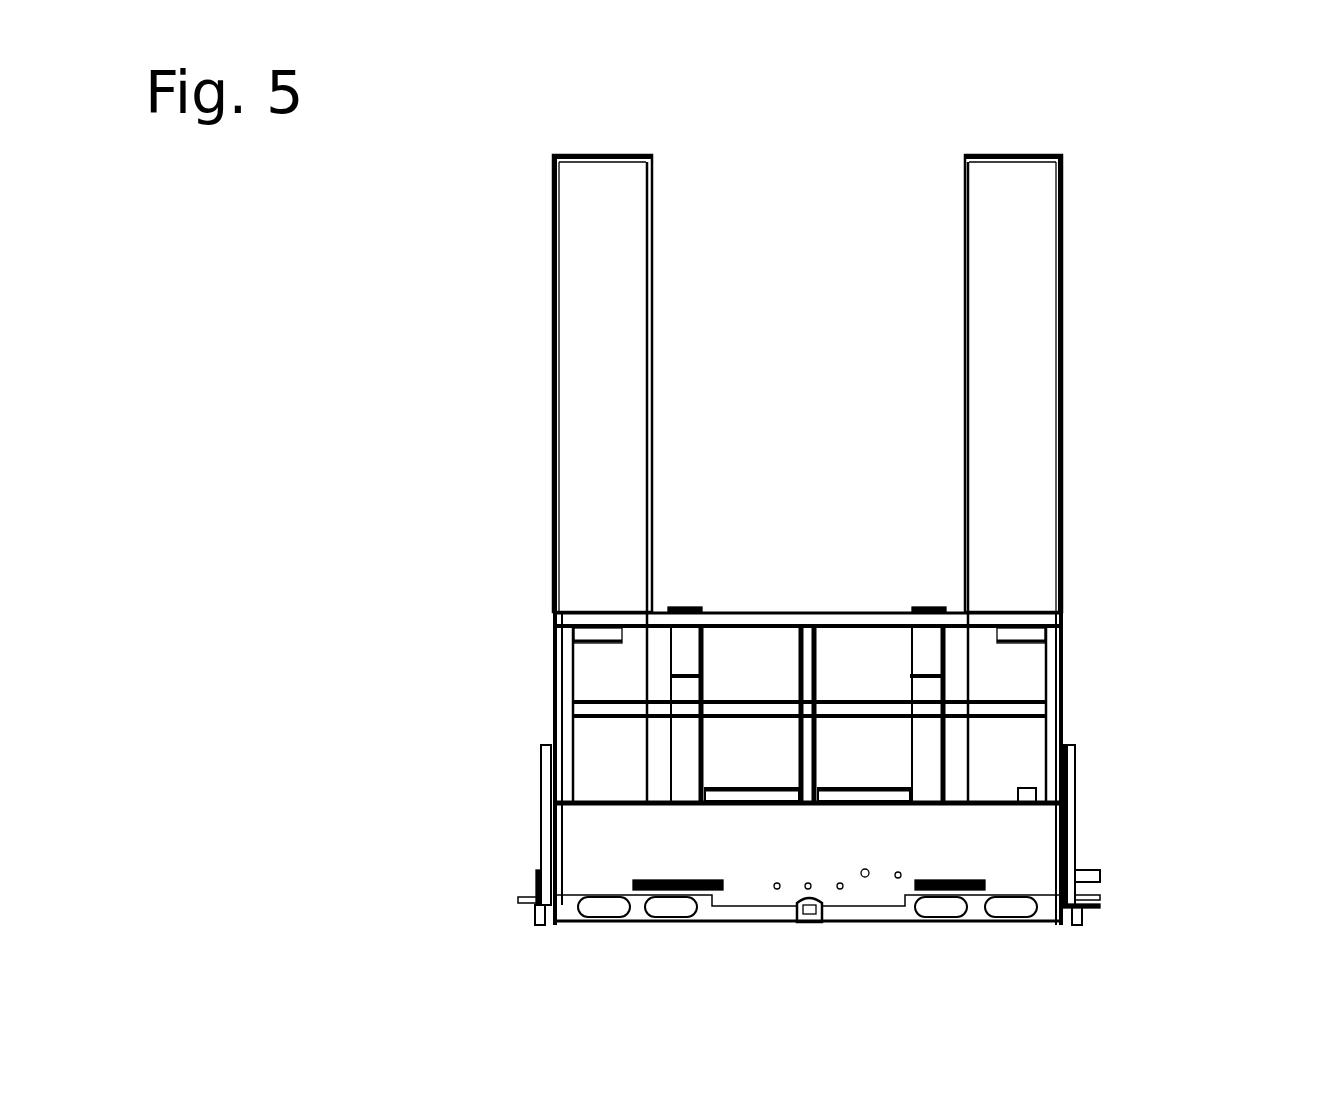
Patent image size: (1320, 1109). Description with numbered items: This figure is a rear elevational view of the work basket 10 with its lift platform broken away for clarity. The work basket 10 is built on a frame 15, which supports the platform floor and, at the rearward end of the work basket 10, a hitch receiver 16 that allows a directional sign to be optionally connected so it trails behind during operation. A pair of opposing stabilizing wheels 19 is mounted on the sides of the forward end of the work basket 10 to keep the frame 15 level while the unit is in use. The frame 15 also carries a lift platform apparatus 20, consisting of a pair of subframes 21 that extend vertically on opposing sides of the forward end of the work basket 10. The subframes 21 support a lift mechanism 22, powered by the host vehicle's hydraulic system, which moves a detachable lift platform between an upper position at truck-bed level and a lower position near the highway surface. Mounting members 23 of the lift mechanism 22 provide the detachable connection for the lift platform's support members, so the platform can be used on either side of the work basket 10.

The work basket 10 is at (312, 479).
The frame 15 is at (908, 923).
The hitch receiver 16 is at (800, 925).
The stabilizing wheels 19 is at (530, 918).
The lift platform apparatus 20 is at (441, 372).
The subframes 21 is at (574, 270).
The lift mechanism 22 is at (541, 790).
The mounting members 23 is at (515, 897).